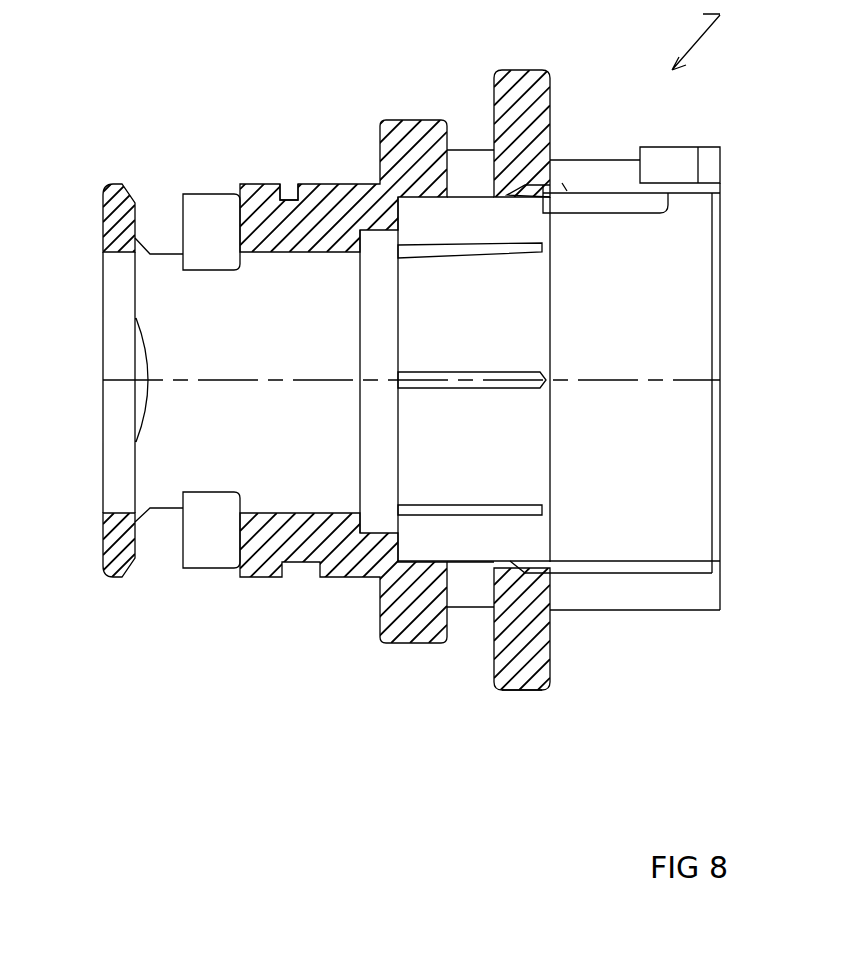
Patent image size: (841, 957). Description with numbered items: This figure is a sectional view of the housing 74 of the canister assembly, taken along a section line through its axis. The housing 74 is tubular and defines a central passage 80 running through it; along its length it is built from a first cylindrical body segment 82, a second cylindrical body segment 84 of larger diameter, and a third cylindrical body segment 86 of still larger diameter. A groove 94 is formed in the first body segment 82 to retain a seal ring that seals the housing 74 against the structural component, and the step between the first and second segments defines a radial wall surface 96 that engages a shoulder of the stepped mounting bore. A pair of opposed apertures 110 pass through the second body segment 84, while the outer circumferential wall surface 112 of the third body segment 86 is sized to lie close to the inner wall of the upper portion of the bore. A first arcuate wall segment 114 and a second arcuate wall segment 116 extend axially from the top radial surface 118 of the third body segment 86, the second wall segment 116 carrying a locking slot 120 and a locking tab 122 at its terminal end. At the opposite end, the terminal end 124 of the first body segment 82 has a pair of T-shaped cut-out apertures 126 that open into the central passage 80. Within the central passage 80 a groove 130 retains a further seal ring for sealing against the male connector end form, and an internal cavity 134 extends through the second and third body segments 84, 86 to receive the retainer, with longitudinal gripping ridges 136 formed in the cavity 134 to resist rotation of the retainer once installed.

The housing 74 is at (696, 41).
The central passage 80 is at (113, 253).
The first cylindrical body segment 82 is at (266, 182).
The second cylindrical body segment 84 is at (408, 130).
The third cylindrical body segment 86 is at (533, 100).
The groove 94 is at (300, 183).
The radial wall surface 96 is at (377, 603).
The aperture 110 is at (468, 165).
The outer circumferential wall surface 112 is at (523, 690).
The first arcuate wall segment 114 is at (687, 600).
The second arcuate wall segment 116 is at (680, 265).
The top radial surface 118 is at (550, 642).
The locking slot 120 is at (594, 165).
The locking tab 122 is at (673, 153).
The terminal end 124 is at (112, 543).
The cut-out aperture 126 is at (193, 566).
The groove 130 is at (380, 232).
The internal cavity 134 is at (417, 560).
The longitudinal gripping ridge 136 is at (440, 250).